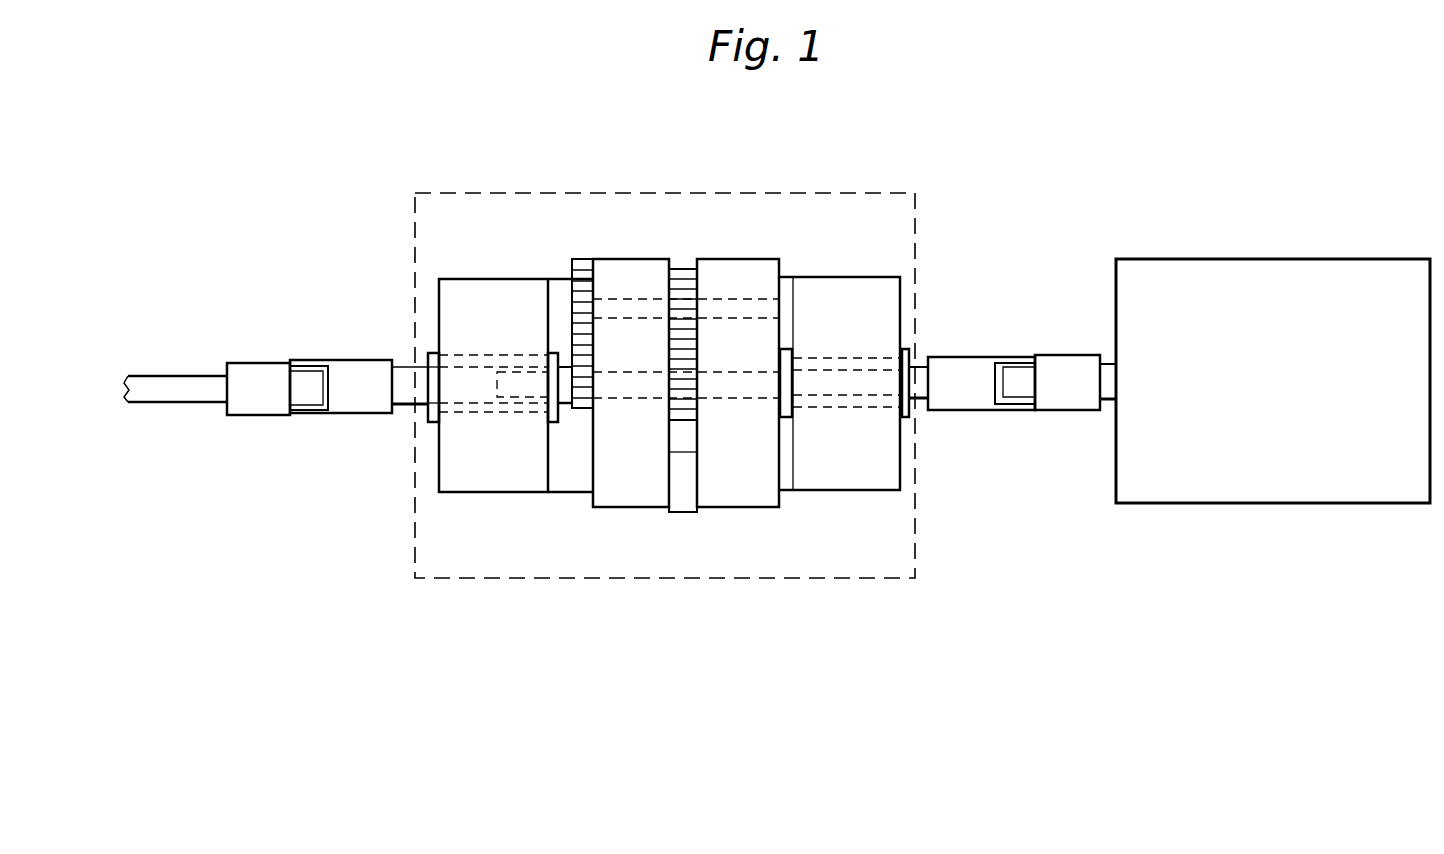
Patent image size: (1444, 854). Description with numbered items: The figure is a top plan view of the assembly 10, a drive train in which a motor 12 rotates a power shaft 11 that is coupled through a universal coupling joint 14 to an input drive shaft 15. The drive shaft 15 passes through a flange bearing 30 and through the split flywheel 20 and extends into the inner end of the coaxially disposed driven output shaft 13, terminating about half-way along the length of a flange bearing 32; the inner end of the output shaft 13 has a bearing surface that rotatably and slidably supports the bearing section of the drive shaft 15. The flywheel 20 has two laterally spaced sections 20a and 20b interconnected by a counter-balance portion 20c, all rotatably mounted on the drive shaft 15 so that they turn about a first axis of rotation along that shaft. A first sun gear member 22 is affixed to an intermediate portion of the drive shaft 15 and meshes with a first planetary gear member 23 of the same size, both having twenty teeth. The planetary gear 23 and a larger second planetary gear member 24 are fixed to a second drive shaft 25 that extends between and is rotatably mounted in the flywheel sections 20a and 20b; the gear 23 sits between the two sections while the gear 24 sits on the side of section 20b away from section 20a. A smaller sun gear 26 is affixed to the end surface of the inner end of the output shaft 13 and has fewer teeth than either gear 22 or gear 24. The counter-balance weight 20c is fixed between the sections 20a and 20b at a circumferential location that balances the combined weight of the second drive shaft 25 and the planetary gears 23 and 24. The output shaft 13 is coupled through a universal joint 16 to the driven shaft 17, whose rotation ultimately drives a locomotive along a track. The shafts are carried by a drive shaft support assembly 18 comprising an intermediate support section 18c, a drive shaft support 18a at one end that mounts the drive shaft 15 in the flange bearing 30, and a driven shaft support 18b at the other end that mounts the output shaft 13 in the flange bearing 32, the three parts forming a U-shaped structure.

The motion transfer apparatus 10 is at (515, 188).
The power shaft 11 is at (1110, 364).
The motor 12 is at (1276, 272).
The driven output shaft 13 is at (403, 373).
The universal coupling joint 14 is at (1022, 340).
The input drive shaft 15 is at (922, 377).
The universal joint 16 is at (306, 340).
The driven shaft 17 is at (185, 383).
The drive shaft support assembly 18 is at (809, 508).
The drive shaft support 18a is at (866, 325).
The driven shaft support 18b is at (518, 327).
The intermediate support section 18c is at (567, 480).
The split flywheel 20 is at (637, 522).
The first flywheel section 20a is at (716, 475).
The second flywheel section 20b is at (608, 475).
The counter-balance portion 20c is at (683, 501).
The first sun gear member 22 is at (678, 410).
The first planetary gear member 23 is at (683, 278).
The second planetary gear member 24 is at (580, 265).
The second drive shaft 25 is at (627, 303).
The sun gear 26 is at (582, 410).
The flange bearing 30 is at (912, 410).
The flange bearing 32 is at (435, 405).